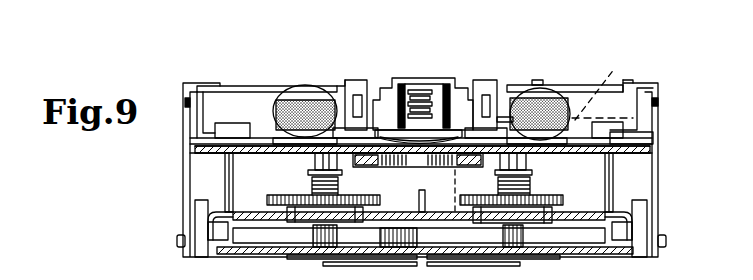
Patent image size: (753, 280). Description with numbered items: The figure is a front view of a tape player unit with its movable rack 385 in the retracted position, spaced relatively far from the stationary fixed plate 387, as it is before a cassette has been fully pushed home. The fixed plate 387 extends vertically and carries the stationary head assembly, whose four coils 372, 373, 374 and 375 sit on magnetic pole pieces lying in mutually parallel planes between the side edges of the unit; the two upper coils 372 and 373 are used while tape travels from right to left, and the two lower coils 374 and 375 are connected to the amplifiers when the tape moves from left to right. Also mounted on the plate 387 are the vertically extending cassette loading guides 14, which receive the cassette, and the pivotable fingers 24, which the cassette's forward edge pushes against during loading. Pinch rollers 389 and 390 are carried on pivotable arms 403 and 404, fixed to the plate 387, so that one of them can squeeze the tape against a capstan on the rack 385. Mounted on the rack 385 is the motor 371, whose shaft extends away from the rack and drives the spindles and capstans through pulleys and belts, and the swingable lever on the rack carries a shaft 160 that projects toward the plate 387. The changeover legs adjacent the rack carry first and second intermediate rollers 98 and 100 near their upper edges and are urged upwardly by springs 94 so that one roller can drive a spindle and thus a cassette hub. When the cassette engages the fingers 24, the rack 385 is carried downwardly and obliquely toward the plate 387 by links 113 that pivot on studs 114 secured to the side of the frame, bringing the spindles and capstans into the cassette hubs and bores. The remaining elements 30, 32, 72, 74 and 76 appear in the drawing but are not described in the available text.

The cassette loading guides 14 is at (183, 86).
The fingers 24 is at (237, 123).
The spring 30 is at (527, 160).
The spring 32 is at (313, 160).
The support 72 is at (354, 80).
The plate 74 is at (502, 117).
The support 76 is at (345, 80).
The springs 94 is at (405, 163).
The first intermediate roller 98 is at (470, 166).
The second intermediate roller 100 is at (362, 166).
The links 113 is at (196, 213).
The studs 114 is at (177, 240).
The shaft 160 is at (420, 206).
The motor 371 is at (602, 82).
The transducing coil 372 is at (428, 90).
The transducing coil 373 is at (405, 100).
The transducing coil 374 is at (440, 118).
The transducing coil 375 is at (425, 100).
The rack 385 is at (247, 212).
The fixed plate 387 is at (192, 154).
The pinch roller 389 is at (542, 108).
The pinch roller 390 is at (328, 100).
The pivotable arm 403 is at (597, 70).
The pivotable arm 404 is at (273, 86).